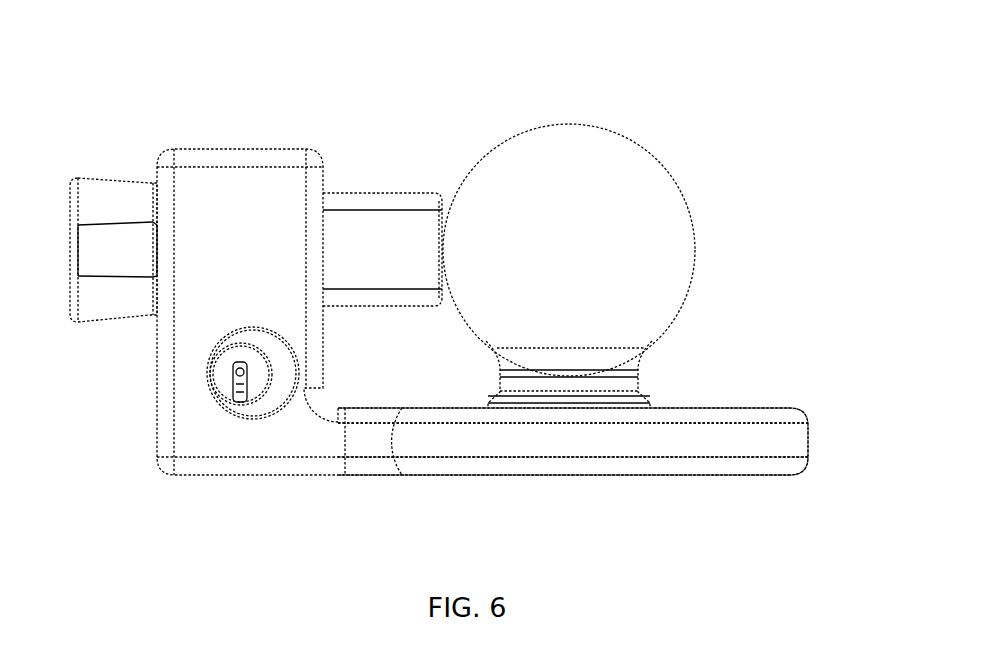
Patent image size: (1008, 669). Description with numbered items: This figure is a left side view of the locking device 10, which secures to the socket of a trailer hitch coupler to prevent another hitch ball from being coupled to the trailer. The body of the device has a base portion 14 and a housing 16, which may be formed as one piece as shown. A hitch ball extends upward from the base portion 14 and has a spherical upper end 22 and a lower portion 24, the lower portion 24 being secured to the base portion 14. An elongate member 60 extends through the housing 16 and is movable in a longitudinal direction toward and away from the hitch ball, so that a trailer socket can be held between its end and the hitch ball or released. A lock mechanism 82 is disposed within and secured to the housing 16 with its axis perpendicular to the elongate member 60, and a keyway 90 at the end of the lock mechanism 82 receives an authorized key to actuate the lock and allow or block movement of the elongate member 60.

The locking device 10 is at (810, 123).
The base portion 14 is at (773, 420).
The housing 16 is at (173, 355).
The spherical upper end 22 is at (663, 171).
The lower portion 24 is at (628, 387).
The elongate member 60 is at (415, 209).
The lock mechanism 82 is at (260, 433).
The keyway 90 is at (240, 385).